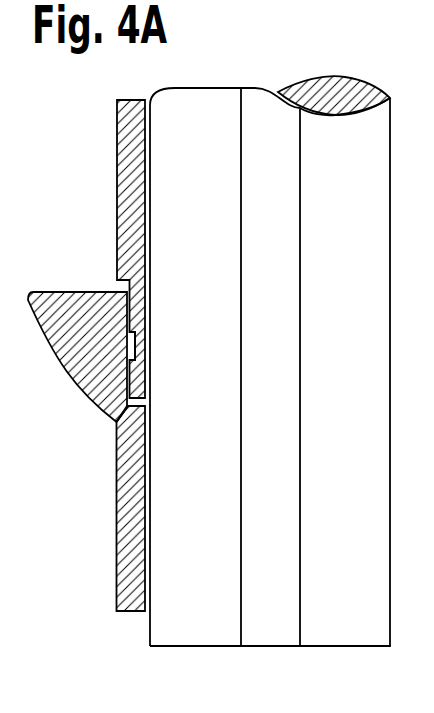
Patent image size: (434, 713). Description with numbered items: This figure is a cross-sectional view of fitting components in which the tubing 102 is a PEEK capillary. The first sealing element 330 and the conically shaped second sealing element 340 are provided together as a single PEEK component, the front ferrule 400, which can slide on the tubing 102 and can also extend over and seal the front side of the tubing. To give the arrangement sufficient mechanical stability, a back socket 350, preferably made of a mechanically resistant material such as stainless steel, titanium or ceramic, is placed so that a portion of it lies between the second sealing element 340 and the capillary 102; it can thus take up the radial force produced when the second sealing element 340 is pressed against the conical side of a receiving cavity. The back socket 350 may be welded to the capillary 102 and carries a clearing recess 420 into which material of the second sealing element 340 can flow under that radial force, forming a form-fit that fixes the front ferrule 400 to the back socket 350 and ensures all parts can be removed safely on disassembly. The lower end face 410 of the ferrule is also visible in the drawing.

The tubing 102 is at (227, 108).
The back socket 350 is at (126, 184).
The clearing recess 420 is at (135, 346).
The second sealing element 340 is at (80, 367).
The first sealing element 330 is at (126, 549).
The lower end face 410 is at (128, 613).
The front ferrule 400 is at (86, 432).